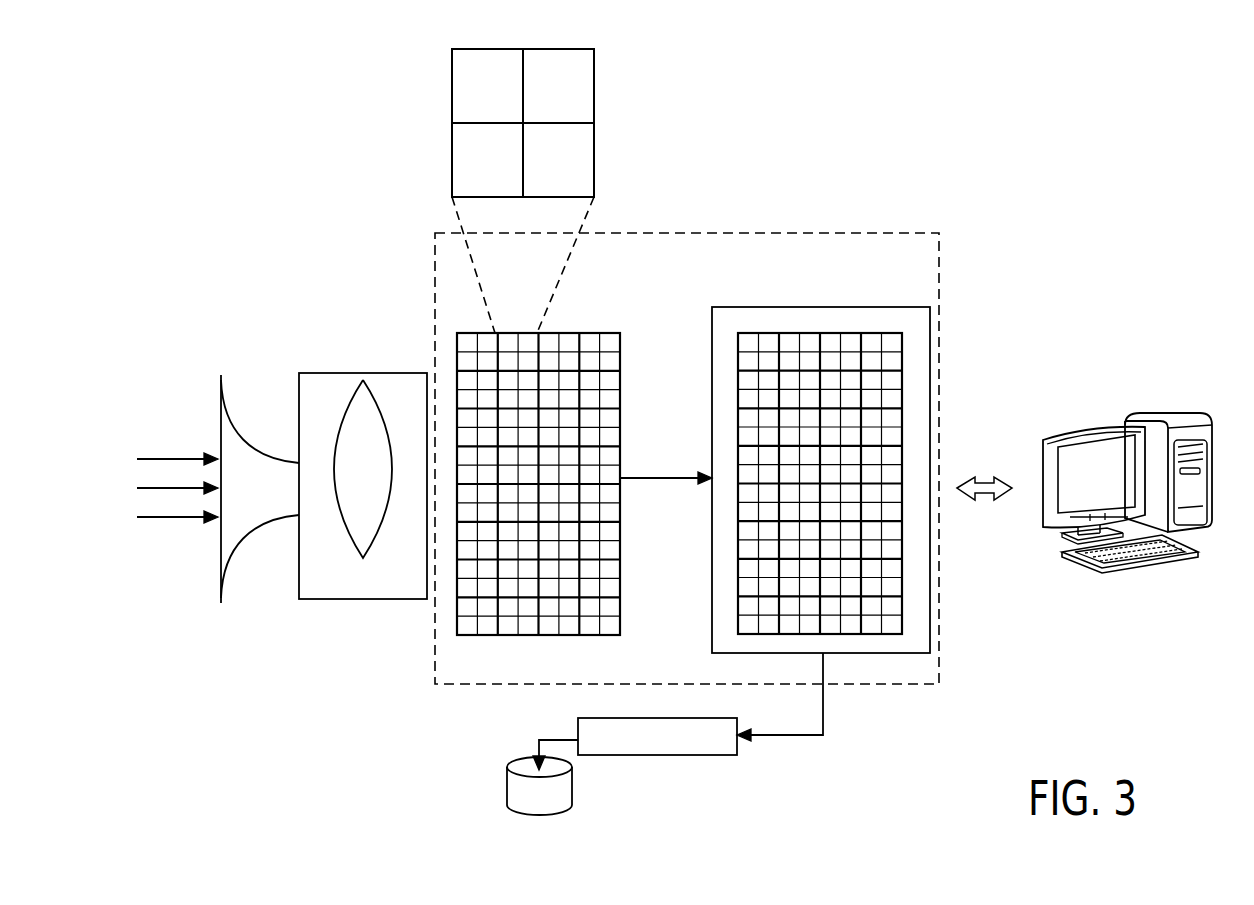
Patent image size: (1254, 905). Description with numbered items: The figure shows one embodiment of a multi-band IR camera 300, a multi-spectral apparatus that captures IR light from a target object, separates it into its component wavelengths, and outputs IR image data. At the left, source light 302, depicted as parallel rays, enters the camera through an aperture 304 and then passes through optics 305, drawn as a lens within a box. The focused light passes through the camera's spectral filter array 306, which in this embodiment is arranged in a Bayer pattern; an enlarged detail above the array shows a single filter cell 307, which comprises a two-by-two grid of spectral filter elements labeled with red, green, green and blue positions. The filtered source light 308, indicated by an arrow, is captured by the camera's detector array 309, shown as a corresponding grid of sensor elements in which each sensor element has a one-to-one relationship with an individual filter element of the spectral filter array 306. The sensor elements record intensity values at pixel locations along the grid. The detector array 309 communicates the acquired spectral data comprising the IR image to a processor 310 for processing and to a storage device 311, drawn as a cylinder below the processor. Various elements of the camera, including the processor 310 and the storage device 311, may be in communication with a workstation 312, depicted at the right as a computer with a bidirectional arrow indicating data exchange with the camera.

The multi-band IR camera 300 is at (818, 190).
The source light 302 is at (165, 457).
The aperture 304 is at (248, 433).
The optics 305 is at (368, 373).
The spectral filter array 306 is at (614, 333).
The filter cell 307 is at (596, 86).
The filtered source light 308 is at (670, 476).
The detector array 309 is at (740, 307).
The processor 310 is at (739, 742).
The storage device 311 is at (572, 786).
The workstation 312 is at (1168, 398).